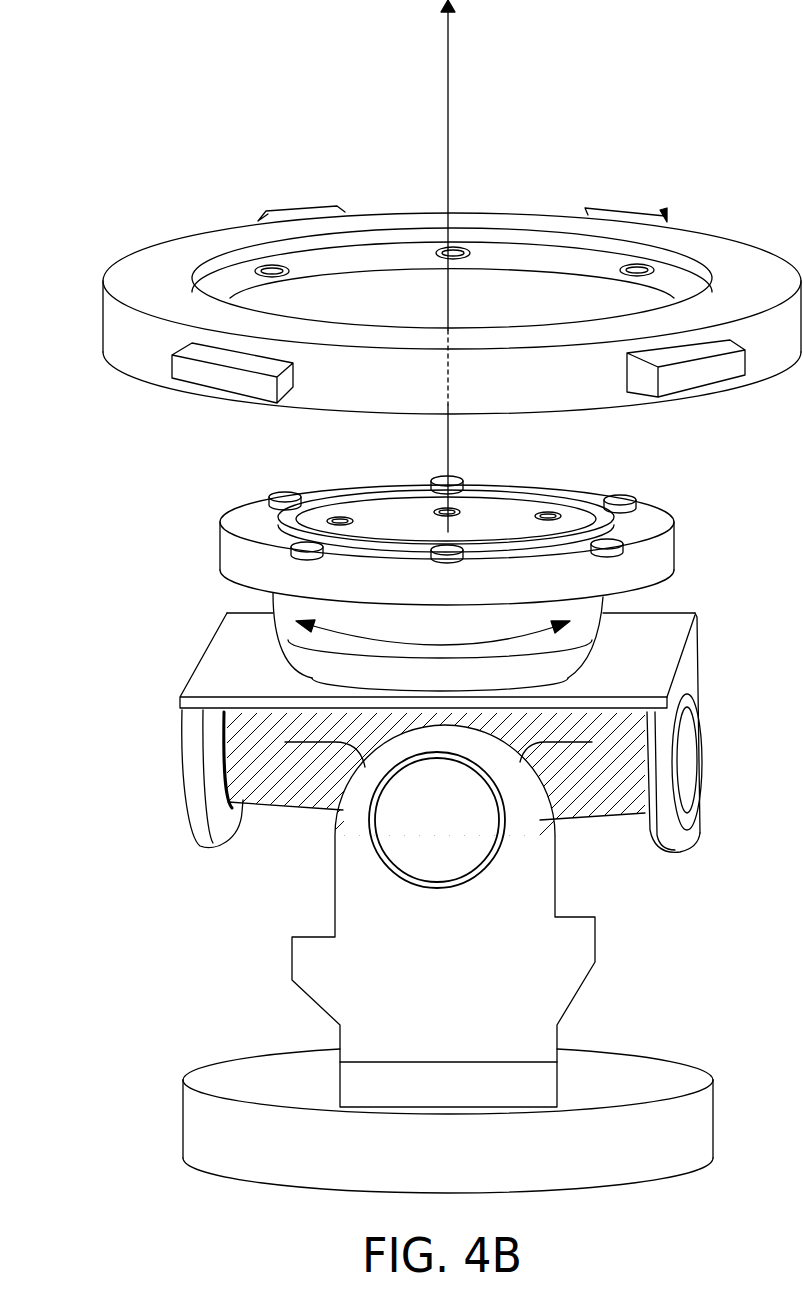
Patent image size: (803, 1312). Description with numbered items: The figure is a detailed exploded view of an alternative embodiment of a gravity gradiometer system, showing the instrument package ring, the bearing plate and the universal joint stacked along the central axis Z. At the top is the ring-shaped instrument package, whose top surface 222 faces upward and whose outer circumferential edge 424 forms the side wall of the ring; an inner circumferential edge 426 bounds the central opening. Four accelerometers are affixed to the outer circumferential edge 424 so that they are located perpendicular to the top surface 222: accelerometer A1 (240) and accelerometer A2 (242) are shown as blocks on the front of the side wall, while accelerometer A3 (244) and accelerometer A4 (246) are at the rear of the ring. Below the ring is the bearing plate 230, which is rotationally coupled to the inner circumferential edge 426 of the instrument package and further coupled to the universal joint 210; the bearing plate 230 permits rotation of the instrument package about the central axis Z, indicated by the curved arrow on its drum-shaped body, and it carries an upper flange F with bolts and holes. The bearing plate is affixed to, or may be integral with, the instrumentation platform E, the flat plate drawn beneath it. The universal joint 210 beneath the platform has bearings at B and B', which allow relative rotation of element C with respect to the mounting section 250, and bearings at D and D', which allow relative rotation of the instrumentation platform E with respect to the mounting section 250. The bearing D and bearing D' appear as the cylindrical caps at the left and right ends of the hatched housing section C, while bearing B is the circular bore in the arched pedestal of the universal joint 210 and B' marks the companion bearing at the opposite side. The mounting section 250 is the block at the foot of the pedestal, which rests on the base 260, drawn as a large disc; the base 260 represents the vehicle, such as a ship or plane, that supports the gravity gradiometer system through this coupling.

The top surface 222 is at (172, 248).
The outer circumferential edge 424 is at (113, 343).
The inner circumferential edge 426 is at (115, 283).
The accelerometer A3 244 is at (294, 213).
The accelerometer A4 246 is at (631, 213).
The accelerometer A2 242 is at (205, 382).
The accelerometer A1 240 is at (697, 373).
The bearing plate 230 is at (287, 651).
The universal joint 210 is at (372, 876).
The mounting section 250 is at (548, 1080).
The base 260 is at (667, 1073).
The central axis Z is at (448, 72).
The flange F is at (250, 568).
The instrumentation platform E is at (317, 660).
The bearing D is at (193, 779).
The bearing D' is at (705, 773).
The bearing B is at (437, 820).
The bearing B' is at (283, 843).
The element C is at (578, 795).
The accelerometer A1 is at (604, 372).
The accelerometer A2 is at (332, 378).
The accelerometer A3 is at (360, 192).
The accelerometer A4 is at (699, 210).